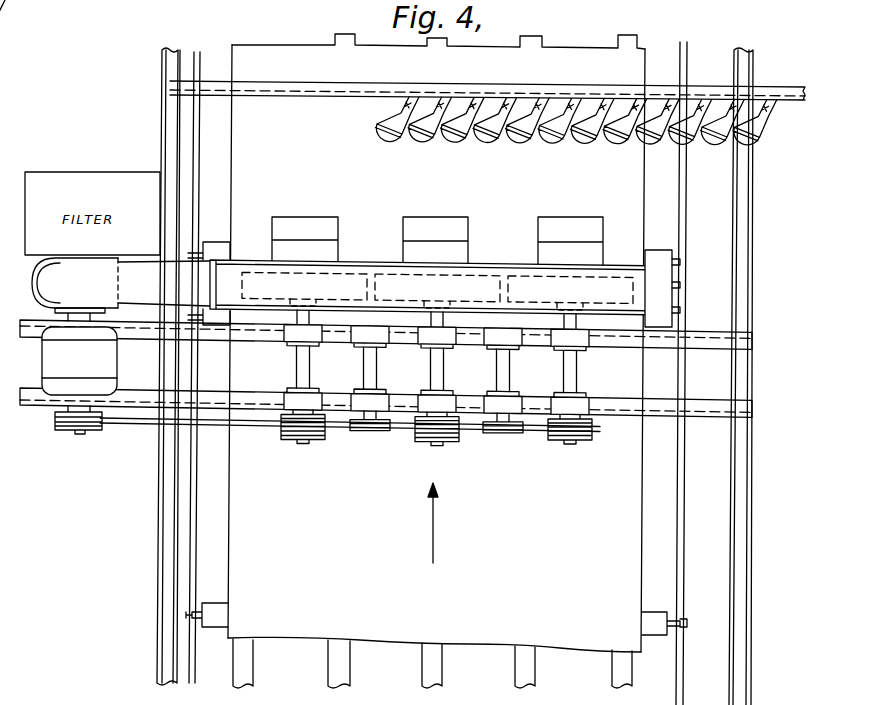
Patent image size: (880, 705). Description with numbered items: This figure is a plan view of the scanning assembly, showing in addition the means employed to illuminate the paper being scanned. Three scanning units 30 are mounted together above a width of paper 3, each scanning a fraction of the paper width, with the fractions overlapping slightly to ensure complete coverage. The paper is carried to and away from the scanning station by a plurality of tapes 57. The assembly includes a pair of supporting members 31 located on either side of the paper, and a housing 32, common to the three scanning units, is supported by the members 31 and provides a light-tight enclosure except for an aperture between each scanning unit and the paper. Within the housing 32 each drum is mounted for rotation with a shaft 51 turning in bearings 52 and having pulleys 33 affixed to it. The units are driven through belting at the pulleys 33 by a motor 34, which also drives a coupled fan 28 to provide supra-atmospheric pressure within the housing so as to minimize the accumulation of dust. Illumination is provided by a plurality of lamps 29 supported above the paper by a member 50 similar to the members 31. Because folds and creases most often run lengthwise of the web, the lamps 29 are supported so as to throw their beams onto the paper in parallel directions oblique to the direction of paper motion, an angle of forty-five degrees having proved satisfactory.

The paper 3 is at (633, 530).
The fan 28 is at (121, 289).
The lamps 29 is at (747, 150).
The scanning units 30 is at (478, 272).
The supporting members 31 is at (700, 344).
The housing 32 is at (652, 283).
The pulleys 33 is at (283, 430).
The motor 34 is at (117, 365).
The member 50 is at (766, 99).
The shaft 51 is at (303, 372).
The bearings 52 is at (288, 396).
The tapes 57 is at (620, 669).